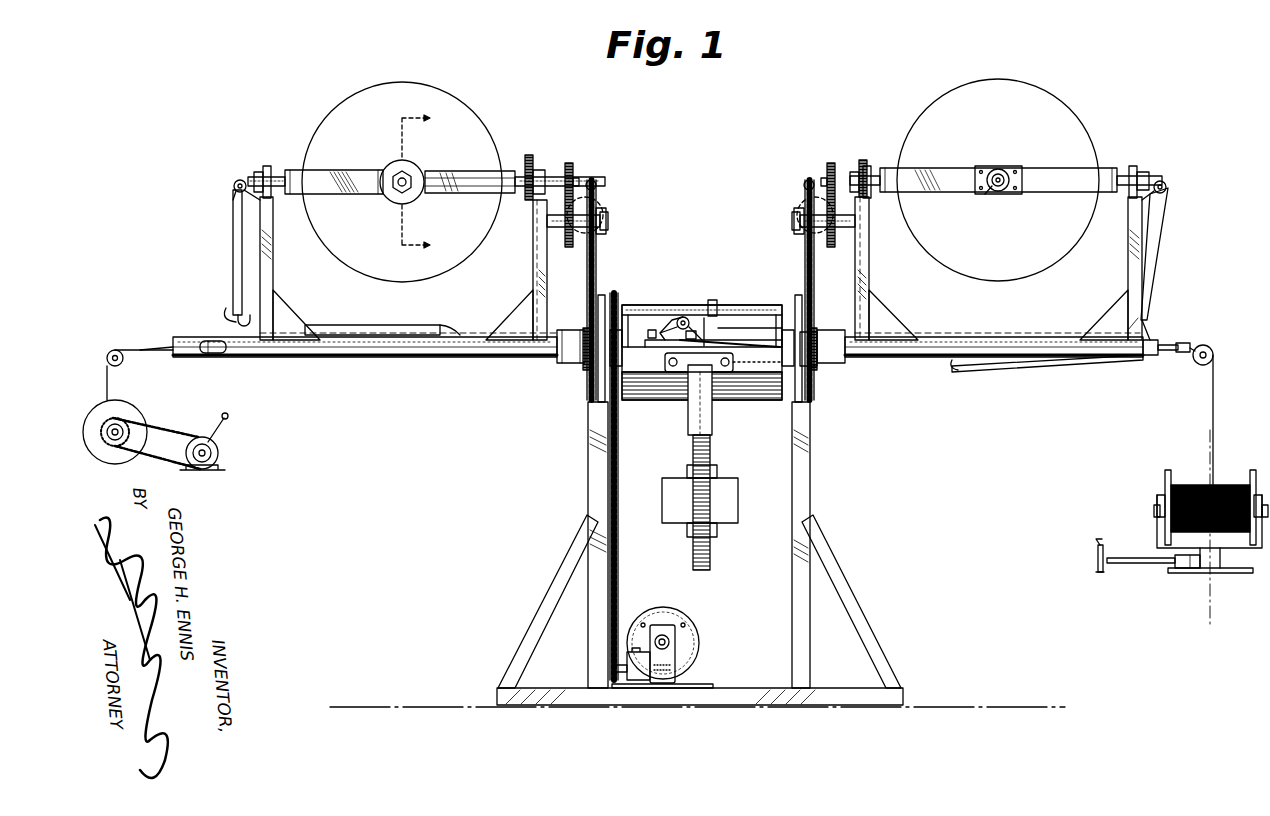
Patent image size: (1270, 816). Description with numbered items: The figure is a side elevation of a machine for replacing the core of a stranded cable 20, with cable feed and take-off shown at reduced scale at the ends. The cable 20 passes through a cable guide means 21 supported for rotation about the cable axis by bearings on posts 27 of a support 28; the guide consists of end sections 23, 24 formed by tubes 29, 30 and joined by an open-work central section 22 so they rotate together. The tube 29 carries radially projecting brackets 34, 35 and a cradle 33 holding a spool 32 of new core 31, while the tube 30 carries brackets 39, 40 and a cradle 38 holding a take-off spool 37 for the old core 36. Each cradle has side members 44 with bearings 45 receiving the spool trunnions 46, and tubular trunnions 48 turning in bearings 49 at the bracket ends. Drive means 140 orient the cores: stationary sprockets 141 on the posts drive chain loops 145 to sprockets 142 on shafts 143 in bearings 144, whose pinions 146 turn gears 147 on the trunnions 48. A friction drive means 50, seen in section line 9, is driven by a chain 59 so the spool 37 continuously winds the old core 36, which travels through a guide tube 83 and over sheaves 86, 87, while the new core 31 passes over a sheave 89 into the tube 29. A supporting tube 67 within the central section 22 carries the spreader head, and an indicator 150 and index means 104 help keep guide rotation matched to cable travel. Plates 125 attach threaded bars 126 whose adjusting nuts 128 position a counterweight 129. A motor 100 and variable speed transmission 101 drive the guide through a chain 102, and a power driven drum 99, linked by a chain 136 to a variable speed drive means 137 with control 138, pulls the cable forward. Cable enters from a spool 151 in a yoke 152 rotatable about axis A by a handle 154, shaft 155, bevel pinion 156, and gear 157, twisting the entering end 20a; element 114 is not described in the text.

The section line 9- 9 is at (424, 182).
The cable 20 is at (142, 348).
The entering end of cable 20a is at (1214, 405).
The cable guide means 21 is at (840, 368).
The central section 22 is at (745, 398).
The end section 23 is at (1020, 372).
The end section 24 is at (378, 362).
The posts 27 is at (588, 440).
The support 28 is at (790, 682).
The tube 29 is at (905, 362).
The tube 30 is at (488, 362).
The new core 31 is at (1158, 255).
The spool 32 is at (1038, 92).
The cradle 33 is at (1043, 198).
The bracket 34 is at (1128, 268).
The bracket 35 is at (869, 292).
The old core 36 is at (233, 242).
The spool 37 is at (406, 82).
The cradle 38 is at (330, 170).
The bracket 39 is at (274, 268).
The bracket 40 is at (533, 250).
The side member 44 is at (292, 170).
The bearings 45 is at (992, 168).
The trunnions 46 is at (990, 194).
The tubular trunnion 48 is at (268, 165).
The bearings 49 is at (258, 170).
The friction drive means 50 is at (428, 166).
The chain 59 is at (529, 155).
The supporting tube 67 is at (640, 340).
The guide tube 83 is at (440, 328).
The sheave 86 is at (225, 303).
The sheave 87 is at (240, 180).
The sheave 89 is at (1165, 183).
The power driven drum 99 is at (118, 400).
The motor 100 is at (690, 632).
The variable speed transmission 101 is at (660, 625).
The chain 102 is at (620, 548).
The index means 104 is at (1152, 318).
The clamp 114 is at (220, 353).
The plates 125 is at (690, 372).
The bars 126 is at (693, 450).
The adjusting nuts 128 is at (717, 470).
The counterweight 129 is at (722, 506).
The chain 136 is at (170, 440).
The variable speed drive means 137 is at (220, 455).
The control 138 is at (230, 420).
The drive means 140 is at (612, 218).
The stationary sprockets 141 is at (583, 385).
The sprockets 142 is at (610, 212).
The shafts 143 is at (590, 198).
The bearings 144 is at (552, 228).
The chain loops 145 is at (600, 250).
The pinions 146 is at (600, 232).
The gears 147 is at (575, 168).
The indicator 150 is at (708, 305).
The spool 151 is at (1180, 470).
The yoke 152 is at (1158, 528).
The handle 154 is at (1098, 570).
The shaft 155 is at (1135, 563).
The bevel pinion 156 is at (1196, 568).
The gear 157 is at (1228, 573).
The axis A- A is at (1209, 530).